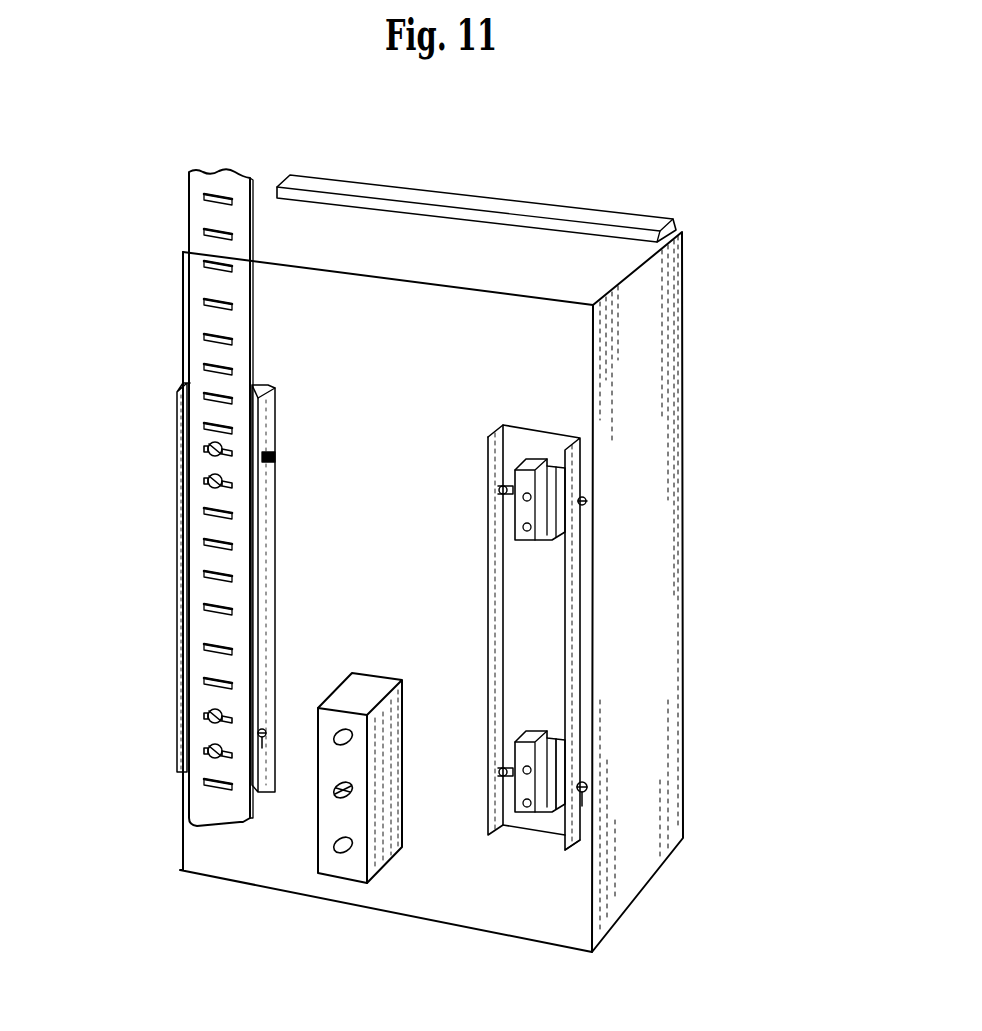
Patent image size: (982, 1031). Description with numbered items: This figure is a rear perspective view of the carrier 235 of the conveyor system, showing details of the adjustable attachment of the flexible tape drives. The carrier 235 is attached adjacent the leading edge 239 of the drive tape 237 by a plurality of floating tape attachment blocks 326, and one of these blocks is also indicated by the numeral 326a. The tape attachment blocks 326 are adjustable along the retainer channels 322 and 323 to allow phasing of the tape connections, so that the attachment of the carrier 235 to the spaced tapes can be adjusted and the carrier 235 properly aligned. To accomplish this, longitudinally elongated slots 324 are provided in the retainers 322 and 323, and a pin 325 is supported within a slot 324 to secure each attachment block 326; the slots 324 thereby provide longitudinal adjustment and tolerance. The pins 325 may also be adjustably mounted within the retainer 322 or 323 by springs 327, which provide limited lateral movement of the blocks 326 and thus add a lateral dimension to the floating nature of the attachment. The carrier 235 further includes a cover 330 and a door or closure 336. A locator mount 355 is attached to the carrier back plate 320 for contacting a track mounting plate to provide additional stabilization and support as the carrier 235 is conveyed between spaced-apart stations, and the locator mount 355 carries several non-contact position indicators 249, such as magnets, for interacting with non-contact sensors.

The carrier 235 is at (716, 414).
The drive tape 237 is at (200, 213).
The leading edge 239 is at (205, 808).
The non-contact position indicators 249 is at (338, 742).
The carrier back plate 320 is at (265, 872).
The retainer channel 322 is at (486, 585).
The retainer channel 323 is at (281, 500).
The longitudinally elongated slot 324 is at (265, 733).
The pin 325 is at (584, 501).
The tape attachment block 326 is at (537, 470).
The bracket side portion 326a is at (549, 830).
The spring 327 is at (505, 488).
The cover 330 is at (655, 302).
The door or closure 336 is at (430, 192).
The locator mount 355 is at (385, 832).